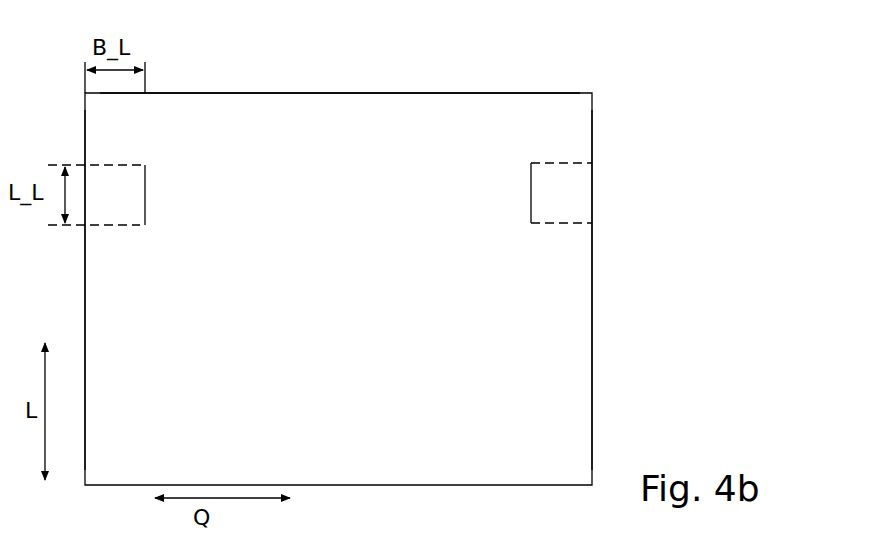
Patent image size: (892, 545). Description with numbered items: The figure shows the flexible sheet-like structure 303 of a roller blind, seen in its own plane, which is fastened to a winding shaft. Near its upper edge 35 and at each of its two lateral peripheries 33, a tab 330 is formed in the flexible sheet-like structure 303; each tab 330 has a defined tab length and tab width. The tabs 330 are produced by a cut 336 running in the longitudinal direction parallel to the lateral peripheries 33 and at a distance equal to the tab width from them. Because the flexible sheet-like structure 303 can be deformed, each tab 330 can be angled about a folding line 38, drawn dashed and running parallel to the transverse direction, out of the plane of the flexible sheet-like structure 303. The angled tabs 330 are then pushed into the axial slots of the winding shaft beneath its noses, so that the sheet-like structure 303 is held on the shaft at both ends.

The flexible sheet-like structure 303 is at (612, 257).
The top edge 35 is at (275, 92).
The lateral periphery 33 is at (85, 298).
The folding line 38 is at (107, 162).
The cut 336 is at (145, 190).
The tab 330 is at (117, 207).